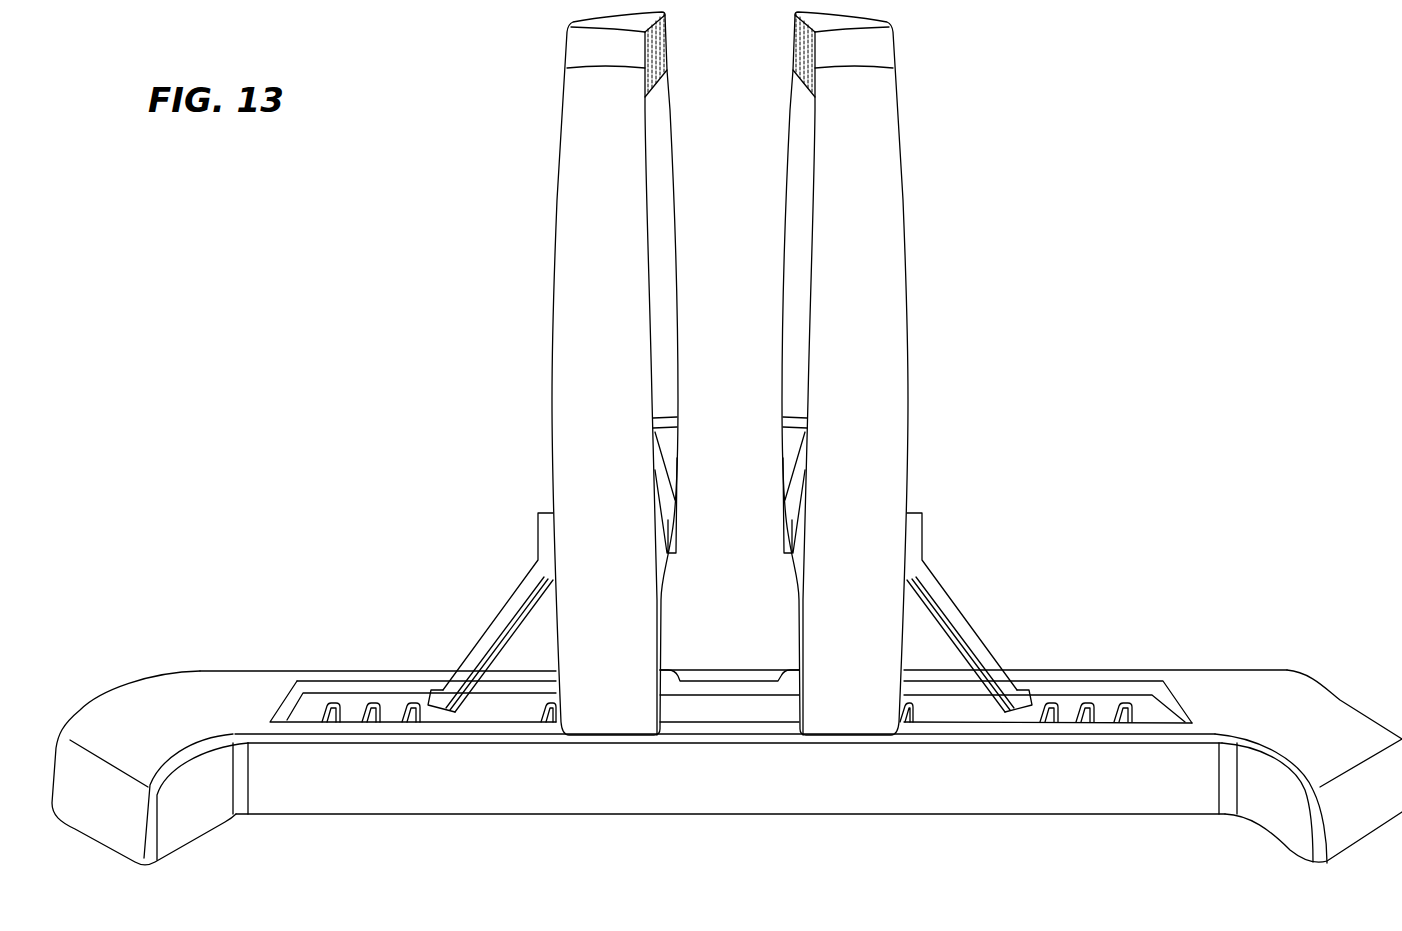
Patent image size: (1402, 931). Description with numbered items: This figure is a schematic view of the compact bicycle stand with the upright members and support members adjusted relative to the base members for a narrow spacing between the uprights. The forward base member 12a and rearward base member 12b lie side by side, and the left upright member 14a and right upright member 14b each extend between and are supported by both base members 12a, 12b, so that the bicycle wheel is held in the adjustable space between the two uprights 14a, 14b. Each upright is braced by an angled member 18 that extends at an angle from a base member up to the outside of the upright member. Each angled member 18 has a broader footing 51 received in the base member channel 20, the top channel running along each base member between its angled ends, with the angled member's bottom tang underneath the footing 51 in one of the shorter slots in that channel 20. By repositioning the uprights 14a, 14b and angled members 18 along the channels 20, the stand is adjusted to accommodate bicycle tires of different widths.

The forward base member 12a is at (727, 728).
The rearward base member 12b is at (727, 728).
The left upright member 14a is at (605, 311).
The right upright member 14b is at (857, 310).
The angled member 18 is at (756, 612).
The base member channel 20 is at (1100, 700).
The broader footing 51 is at (1023, 693).